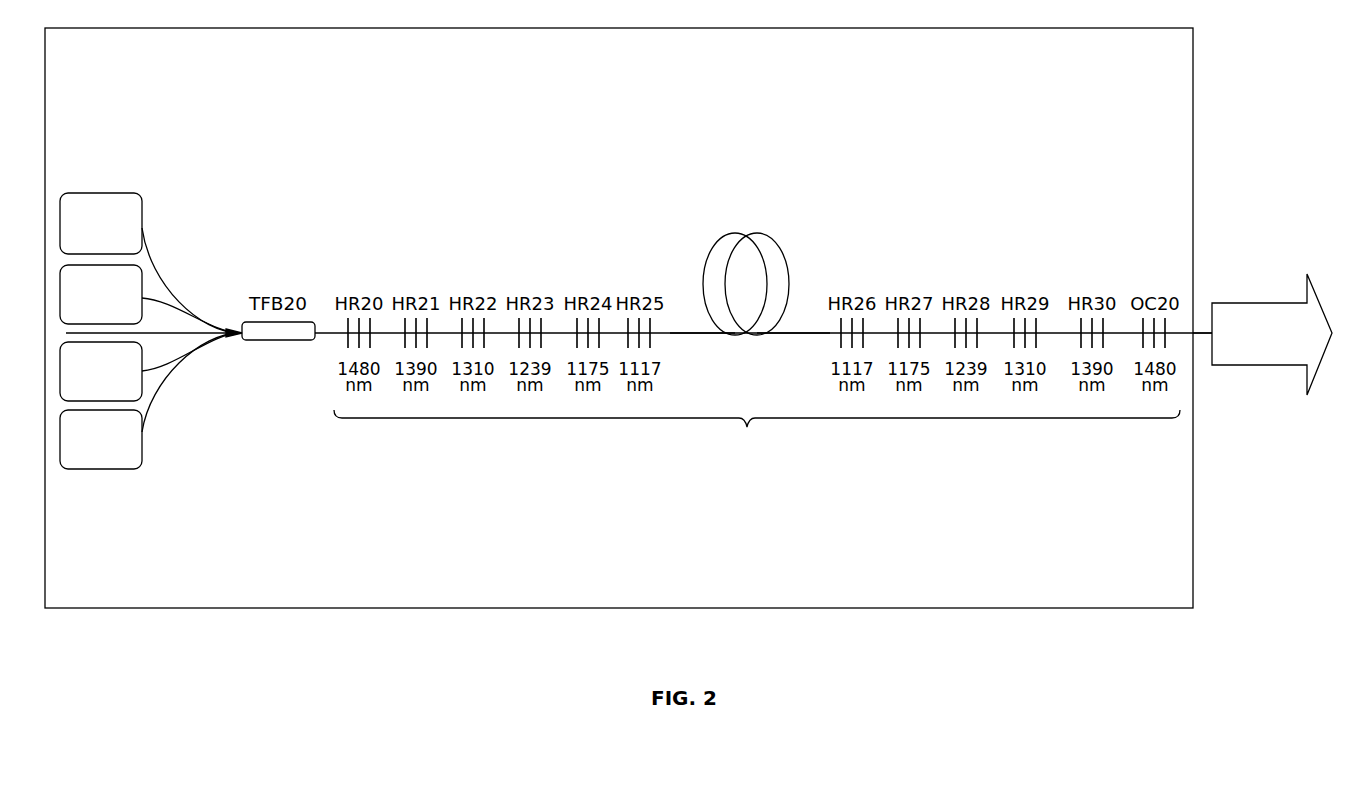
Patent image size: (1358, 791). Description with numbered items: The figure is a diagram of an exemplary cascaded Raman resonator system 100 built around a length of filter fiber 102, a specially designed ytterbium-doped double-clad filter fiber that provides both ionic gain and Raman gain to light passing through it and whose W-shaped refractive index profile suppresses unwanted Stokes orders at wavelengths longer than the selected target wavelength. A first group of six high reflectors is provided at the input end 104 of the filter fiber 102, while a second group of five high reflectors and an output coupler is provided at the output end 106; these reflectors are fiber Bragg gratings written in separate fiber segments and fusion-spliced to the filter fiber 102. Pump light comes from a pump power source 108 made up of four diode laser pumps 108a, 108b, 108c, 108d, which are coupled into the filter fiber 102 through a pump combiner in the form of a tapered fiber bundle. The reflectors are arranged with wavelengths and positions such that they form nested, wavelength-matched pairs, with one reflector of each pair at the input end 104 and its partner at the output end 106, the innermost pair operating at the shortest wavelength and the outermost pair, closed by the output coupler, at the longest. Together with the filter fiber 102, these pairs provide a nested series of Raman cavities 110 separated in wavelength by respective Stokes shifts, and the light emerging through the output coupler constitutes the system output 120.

The system 100 is at (751, 58).
The filter fiber 102 is at (761, 222).
The input end 104 is at (716, 358).
The output end 106 is at (809, 358).
The pump power source 108 is at (87, 186).
The diode laser pump 108a is at (79, 248).
The diode laser pump 108b is at (79, 320).
The diode laser pump 108c is at (79, 396).
The diode laser pump 108d is at (79, 464).
The nested series of Raman cavities 110 is at (905, 462).
The system output 120 is at (1276, 288).